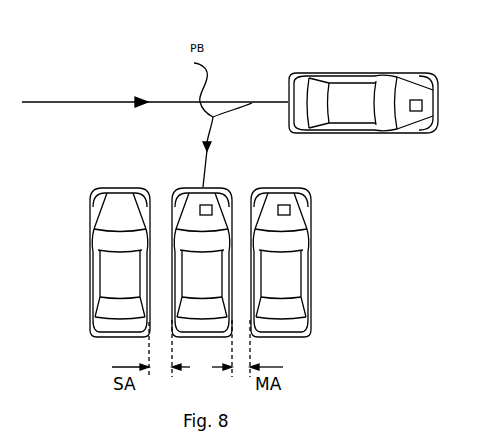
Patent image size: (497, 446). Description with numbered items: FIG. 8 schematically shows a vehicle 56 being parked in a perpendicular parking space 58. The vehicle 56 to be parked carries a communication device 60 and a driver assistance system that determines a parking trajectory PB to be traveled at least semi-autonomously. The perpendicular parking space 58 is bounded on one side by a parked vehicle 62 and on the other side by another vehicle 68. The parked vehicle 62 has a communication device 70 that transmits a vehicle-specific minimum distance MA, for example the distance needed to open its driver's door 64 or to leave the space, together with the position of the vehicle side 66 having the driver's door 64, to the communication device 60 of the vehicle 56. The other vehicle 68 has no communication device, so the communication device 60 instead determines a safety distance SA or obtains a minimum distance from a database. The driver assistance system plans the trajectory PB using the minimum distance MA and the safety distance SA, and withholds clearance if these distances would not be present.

The vehicle to be parked 56 is at (352, 99).
The perpendicular parking space 58 is at (155, 197).
The communication device 60 is at (422, 100).
The parked vehicle 62 is at (319, 244).
The driver's door 64 is at (302, 229).
The vehicle side 66 is at (258, 204).
The other vehicle 68 is at (112, 276).
The communication device 70 is at (291, 210).